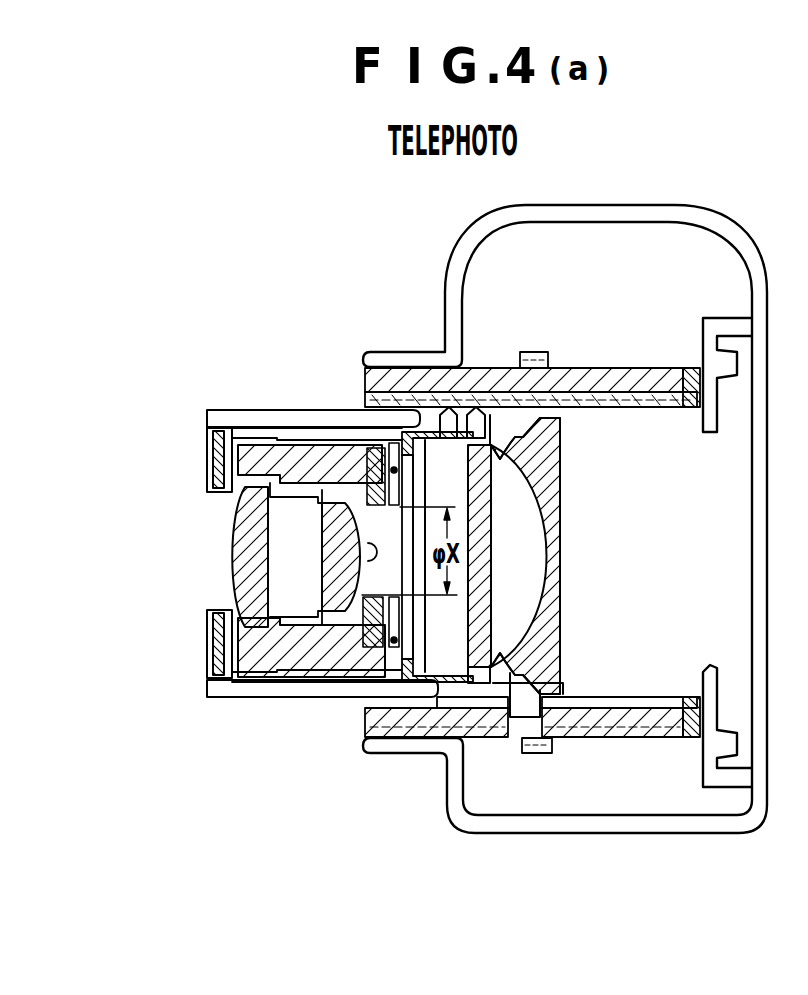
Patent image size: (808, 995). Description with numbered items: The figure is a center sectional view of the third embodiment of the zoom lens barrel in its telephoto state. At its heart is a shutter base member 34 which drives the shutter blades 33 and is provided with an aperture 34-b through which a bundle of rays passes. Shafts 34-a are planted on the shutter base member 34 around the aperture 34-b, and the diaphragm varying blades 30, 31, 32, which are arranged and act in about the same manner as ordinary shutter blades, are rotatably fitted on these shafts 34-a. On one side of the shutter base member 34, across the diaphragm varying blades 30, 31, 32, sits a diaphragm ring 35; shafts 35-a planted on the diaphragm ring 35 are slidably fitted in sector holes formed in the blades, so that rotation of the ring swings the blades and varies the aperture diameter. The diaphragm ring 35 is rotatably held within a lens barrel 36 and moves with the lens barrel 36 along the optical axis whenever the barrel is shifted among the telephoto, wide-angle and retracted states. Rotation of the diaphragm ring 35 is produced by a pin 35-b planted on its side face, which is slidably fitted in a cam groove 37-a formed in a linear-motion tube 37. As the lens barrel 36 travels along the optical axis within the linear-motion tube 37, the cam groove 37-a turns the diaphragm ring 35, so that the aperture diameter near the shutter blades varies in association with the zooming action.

The diaphragm varying blade 30 is at (430, 570).
The diaphragm varying blade 31 is at (479, 556).
The diaphragm varying blade 32 is at (525, 556).
The shutter blade 33 is at (378, 572).
The shutter base member 34 is at (305, 452).
The shaft 34-a is at (412, 430).
The aperture 34-b is at (385, 522).
The diaphragm ring 35 is at (386, 645).
The shaft 35-a is at (380, 660).
The pin 35-b is at (470, 431).
The lens barrel 36 is at (240, 413).
The linear-motion tube 37 is at (634, 392).
The cam groove 37-a is at (607, 405).